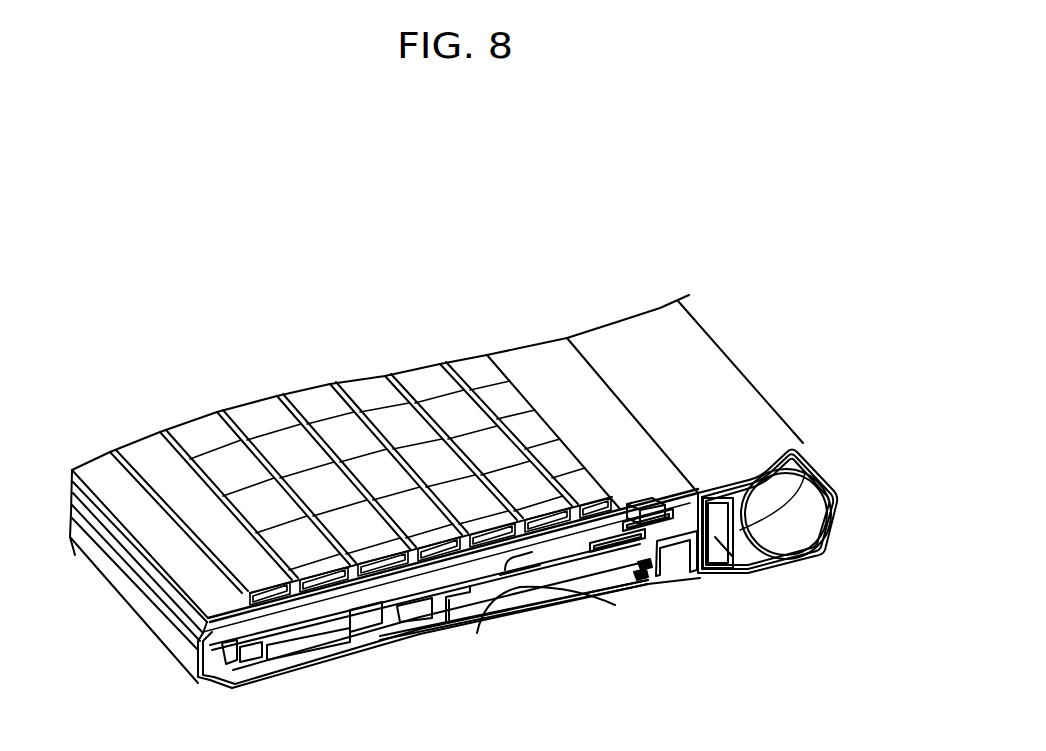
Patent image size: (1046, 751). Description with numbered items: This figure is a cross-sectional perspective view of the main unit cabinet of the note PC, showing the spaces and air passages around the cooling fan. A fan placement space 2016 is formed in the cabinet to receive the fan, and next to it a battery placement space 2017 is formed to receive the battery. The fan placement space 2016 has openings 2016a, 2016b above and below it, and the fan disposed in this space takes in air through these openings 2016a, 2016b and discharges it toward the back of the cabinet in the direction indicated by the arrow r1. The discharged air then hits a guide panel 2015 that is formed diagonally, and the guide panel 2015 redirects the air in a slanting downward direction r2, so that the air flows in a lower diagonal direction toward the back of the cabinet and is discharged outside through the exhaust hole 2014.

The exhaust hole 2014 is at (651, 582).
The guide panel 2015 is at (673, 553).
The fan placement space 2016 is at (462, 613).
The opening 2016a is at (537, 613).
The opening 2016b is at (514, 560).
The battery placement space 2017 is at (783, 496).
The arrow r1 is at (660, 562).
The direction r2 is at (652, 582).